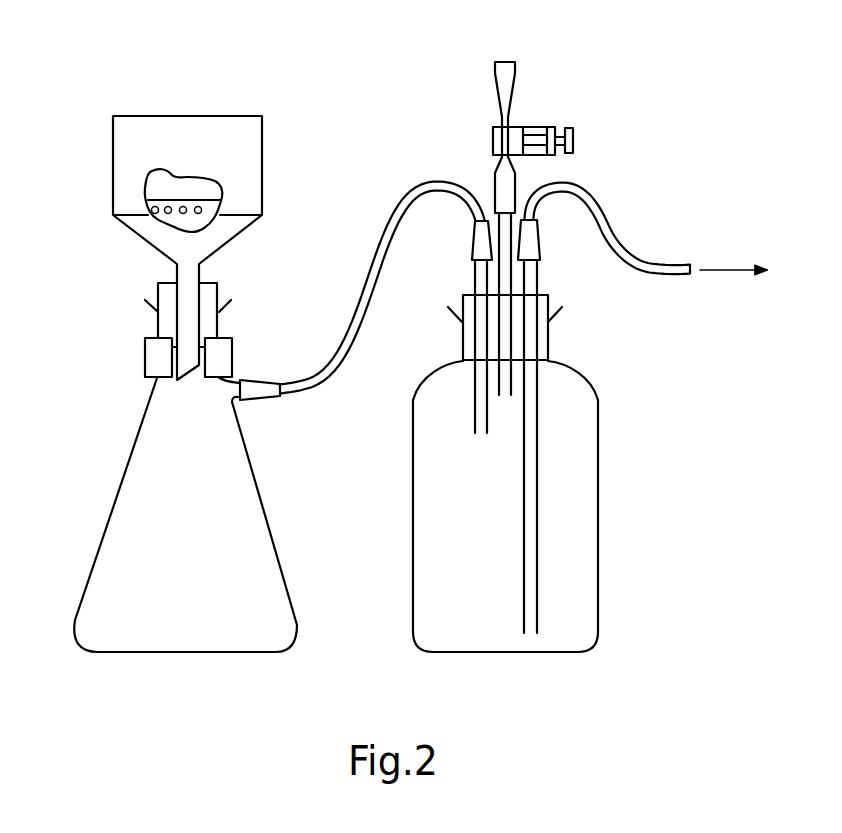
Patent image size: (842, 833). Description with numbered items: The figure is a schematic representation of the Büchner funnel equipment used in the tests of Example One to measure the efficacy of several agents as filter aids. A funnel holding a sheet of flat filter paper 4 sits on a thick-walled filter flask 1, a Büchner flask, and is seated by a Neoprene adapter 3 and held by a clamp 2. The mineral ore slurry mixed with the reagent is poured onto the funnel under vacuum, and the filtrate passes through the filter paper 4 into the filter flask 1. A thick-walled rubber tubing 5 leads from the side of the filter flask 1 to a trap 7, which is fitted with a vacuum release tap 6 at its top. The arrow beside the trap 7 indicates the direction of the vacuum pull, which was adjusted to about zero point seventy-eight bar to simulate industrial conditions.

The thick-walled filter flask 1 is at (93, 632).
The clamp 2 is at (158, 357).
The Neoprene adapter 3 is at (160, 285).
The sheet of flat filter paper 4 is at (183, 200).
The thick-walled rubber tubing 5 is at (365, 276).
The vacuum release tap 6 is at (538, 127).
The trap 7 is at (543, 302).